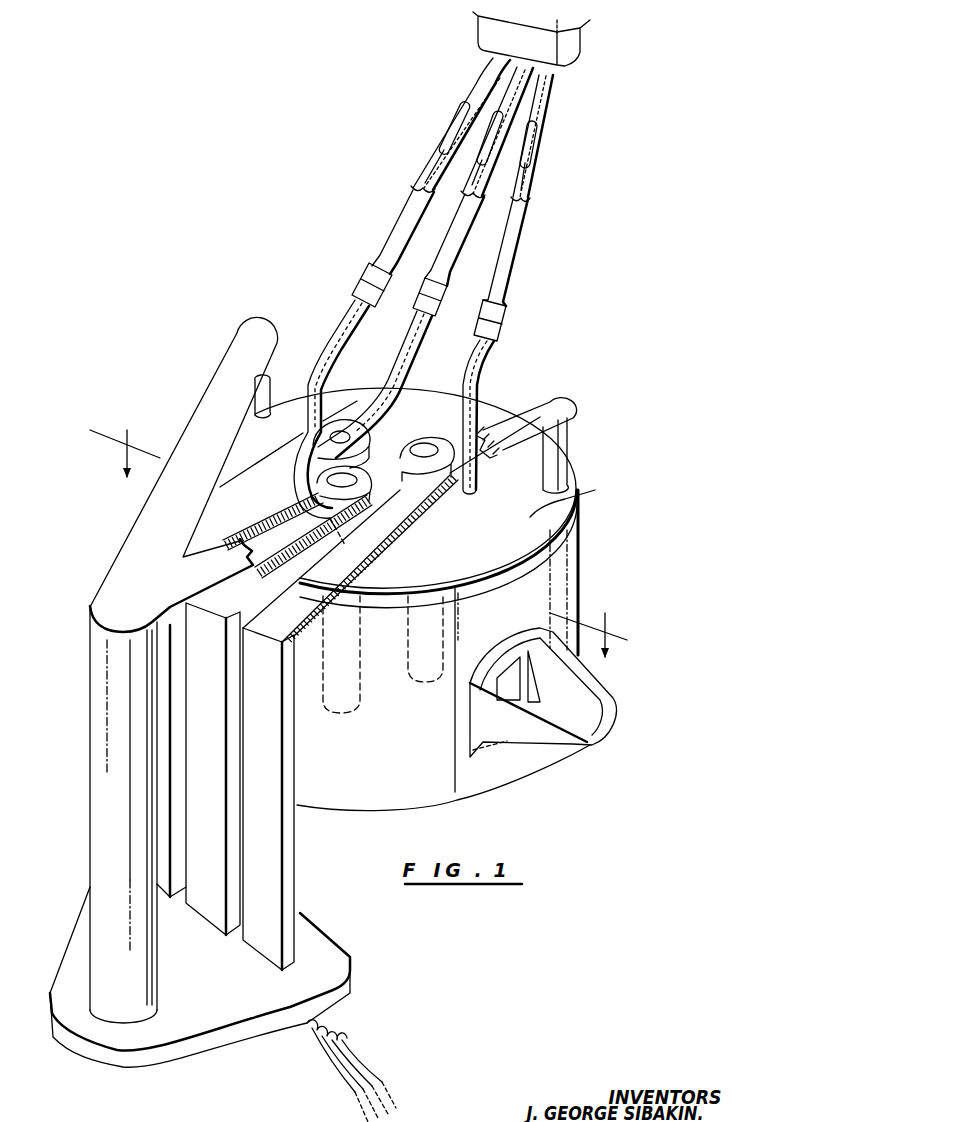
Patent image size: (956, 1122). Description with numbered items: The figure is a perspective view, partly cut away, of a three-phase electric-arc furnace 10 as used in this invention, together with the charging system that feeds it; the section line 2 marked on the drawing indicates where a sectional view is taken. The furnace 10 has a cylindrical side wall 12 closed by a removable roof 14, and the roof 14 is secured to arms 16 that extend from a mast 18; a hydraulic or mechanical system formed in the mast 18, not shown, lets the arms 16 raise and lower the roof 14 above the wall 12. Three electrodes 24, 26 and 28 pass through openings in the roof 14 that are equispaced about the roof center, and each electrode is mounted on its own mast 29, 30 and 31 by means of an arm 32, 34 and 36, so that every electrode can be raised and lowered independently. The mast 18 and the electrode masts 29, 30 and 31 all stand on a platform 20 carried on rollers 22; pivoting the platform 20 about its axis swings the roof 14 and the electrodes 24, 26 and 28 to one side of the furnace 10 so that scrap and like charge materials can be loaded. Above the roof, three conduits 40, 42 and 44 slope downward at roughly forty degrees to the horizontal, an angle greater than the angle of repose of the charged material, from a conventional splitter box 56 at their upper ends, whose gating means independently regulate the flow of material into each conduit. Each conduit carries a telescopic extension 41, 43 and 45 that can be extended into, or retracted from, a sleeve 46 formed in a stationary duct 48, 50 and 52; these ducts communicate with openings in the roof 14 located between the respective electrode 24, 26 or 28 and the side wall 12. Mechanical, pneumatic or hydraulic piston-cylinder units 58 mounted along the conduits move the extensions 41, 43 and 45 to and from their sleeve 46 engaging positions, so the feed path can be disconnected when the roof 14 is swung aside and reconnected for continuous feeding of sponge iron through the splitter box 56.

The section line 2- 2 is at (358, 540).
The furnace 10 is at (460, 599).
The cylindrical side wall 12 is at (555, 581).
The removable roof 14 is at (435, 491).
The arms 16 is at (197, 413).
The mast 18 is at (107, 742).
The platform 20 is at (335, 942).
The rollers 22 is at (335, 1035).
The electrode 24 is at (340, 432).
The electrode 26 is at (342, 477).
The electrode 28 is at (425, 445).
The mast 29 is at (165, 787).
The mast 30 is at (200, 828).
The mast 31 is at (278, 828).
The arm 32 is at (280, 453).
The arm 34 is at (275, 538).
The arm 36 is at (360, 538).
The conduit 40 is at (490, 78).
The telescopic extension 41 is at (413, 203).
The conduit 42 is at (527, 92).
The telescopic extension 43 is at (447, 243).
The conduit 44 is at (543, 110).
The telescopic extension 45 is at (510, 235).
The sleeve 46 is at (435, 294).
The stationary duct 48 is at (335, 336).
The stationary duct 50 is at (407, 350).
The stationary duct 52 is at (477, 367).
The splitter box 56 is at (478, 31).
The piston-cylinder unit 58 is at (450, 120).